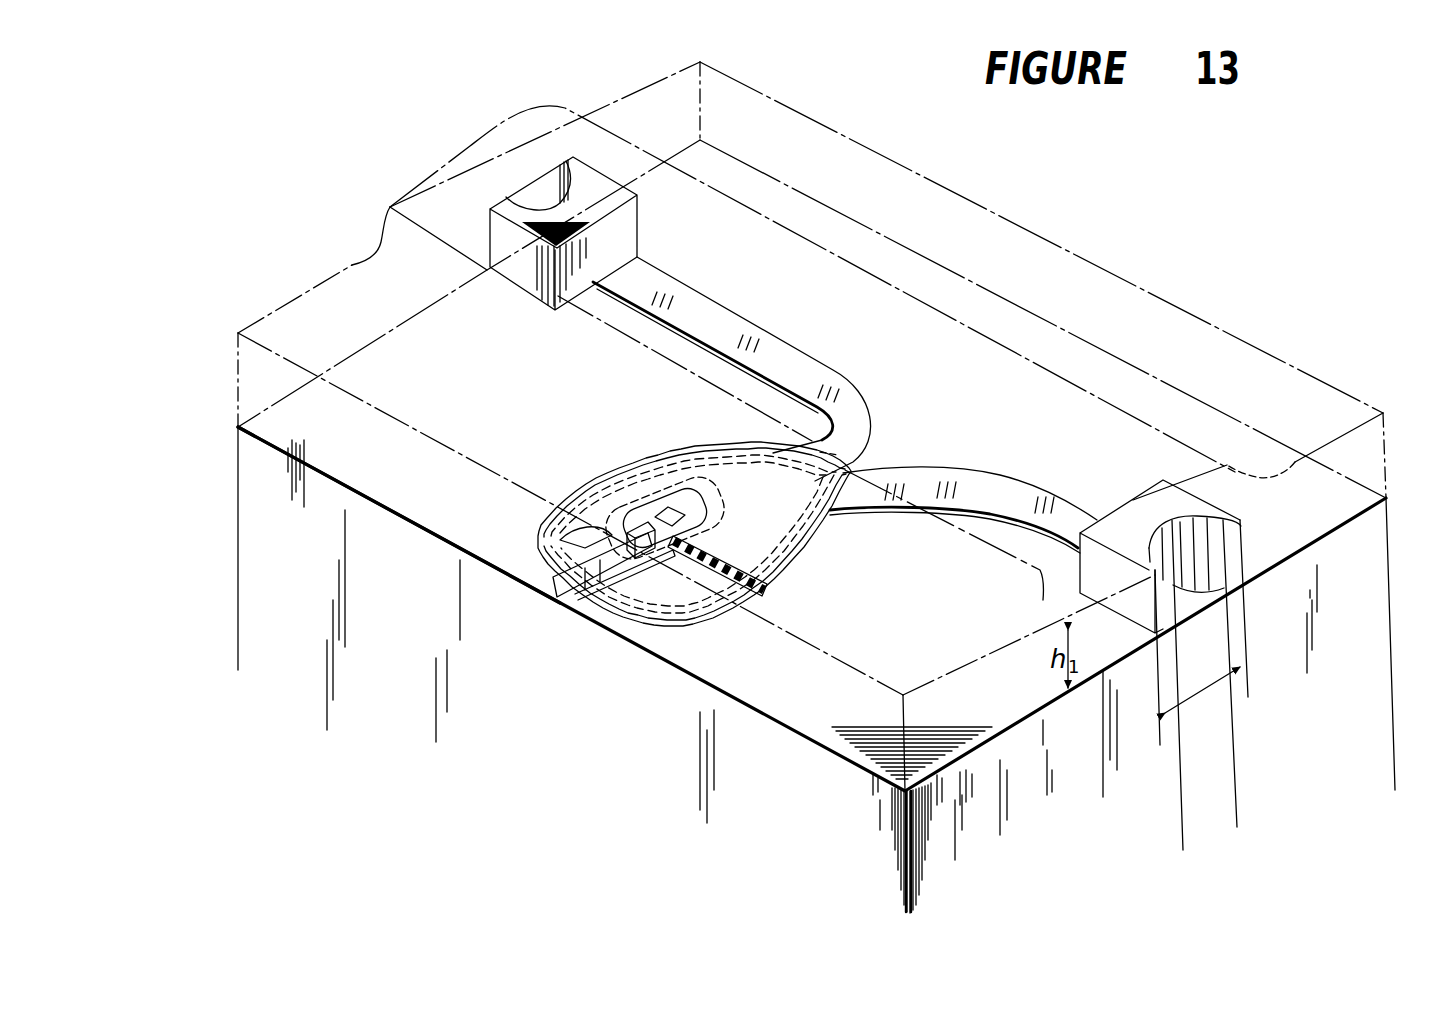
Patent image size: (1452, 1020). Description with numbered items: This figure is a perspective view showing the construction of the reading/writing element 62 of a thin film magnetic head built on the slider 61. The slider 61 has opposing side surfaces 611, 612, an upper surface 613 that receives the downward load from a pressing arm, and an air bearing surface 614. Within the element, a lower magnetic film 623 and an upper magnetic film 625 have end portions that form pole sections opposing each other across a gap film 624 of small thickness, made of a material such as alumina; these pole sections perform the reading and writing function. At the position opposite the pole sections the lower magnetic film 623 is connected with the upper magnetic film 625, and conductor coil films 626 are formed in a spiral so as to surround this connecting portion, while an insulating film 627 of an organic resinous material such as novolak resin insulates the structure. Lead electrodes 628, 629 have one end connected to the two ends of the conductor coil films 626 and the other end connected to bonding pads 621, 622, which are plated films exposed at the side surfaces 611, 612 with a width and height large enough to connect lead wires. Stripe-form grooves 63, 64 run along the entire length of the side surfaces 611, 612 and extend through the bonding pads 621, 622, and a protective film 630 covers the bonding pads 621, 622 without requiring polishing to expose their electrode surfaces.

The slider 61 is at (927, 818).
The side surface 611 is at (234, 572).
The side surface 612 is at (955, 838).
The upper surface 613 is at (1070, 251).
The air bearing surface 614 is at (296, 596).
The reading/writing element 62 is at (641, 456).
The bonding pad 621 is at (590, 183).
The bonding pad 622 is at (1188, 508).
The lower magnetic film 623 is at (690, 566).
The gap film 624 is at (566, 590).
The upper magnetic film 625 is at (578, 535).
The conductor coil films 626 is at (733, 612).
The insulating film 627 is at (795, 584).
The lead electrode 628 is at (713, 322).
The lead electrode 629 is at (990, 496).
The groove 63 is at (552, 196).
The protective film 630 is at (354, 266).
The groove 64 is at (1203, 714).